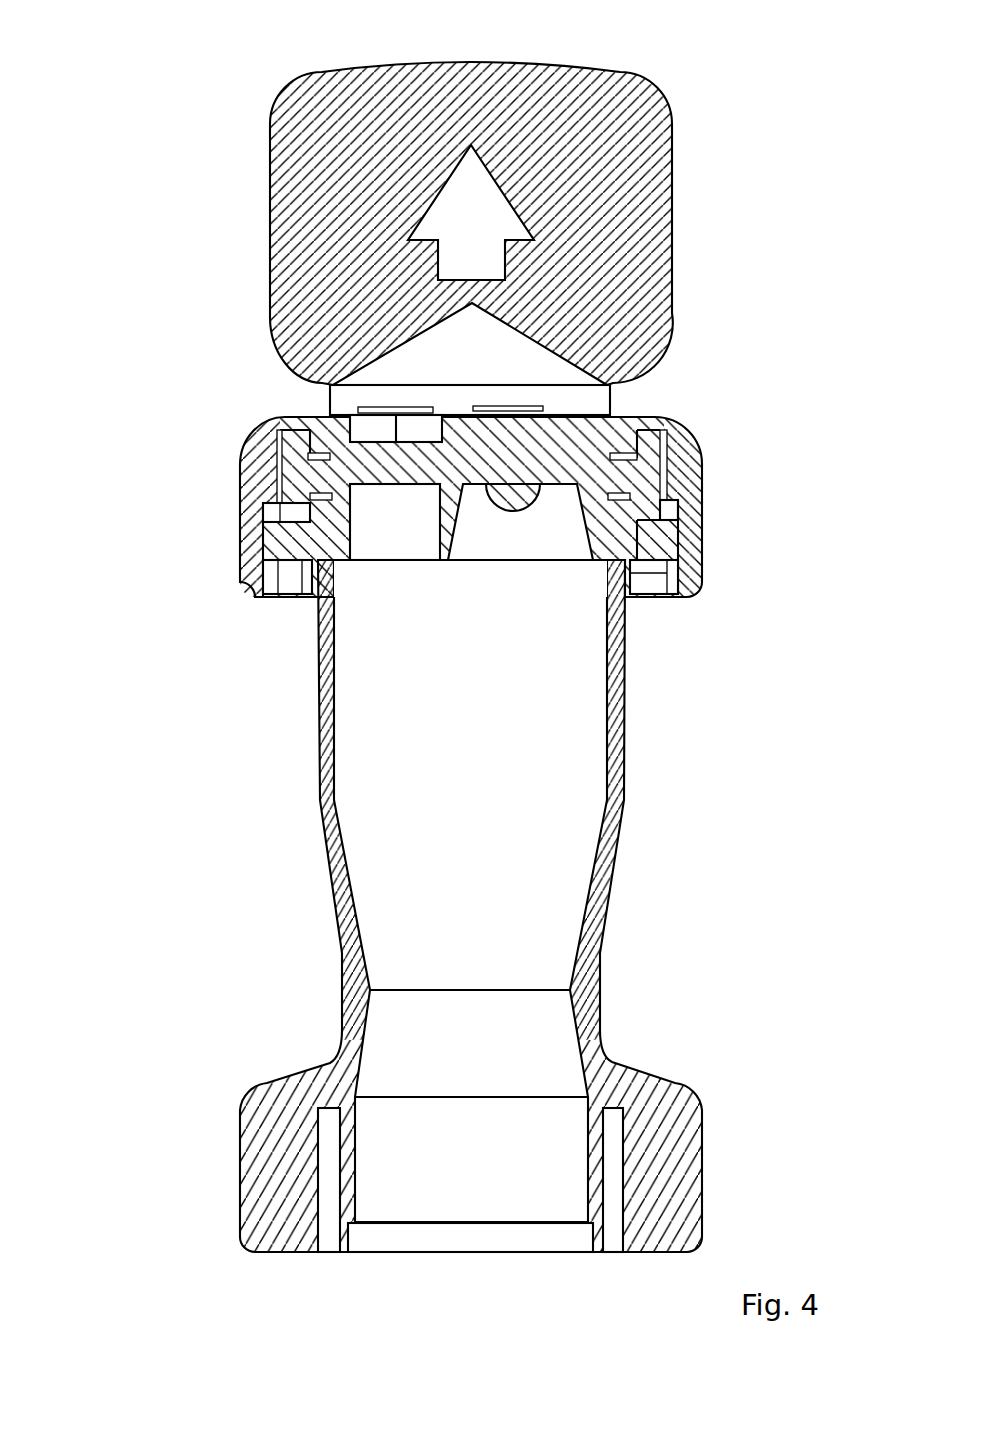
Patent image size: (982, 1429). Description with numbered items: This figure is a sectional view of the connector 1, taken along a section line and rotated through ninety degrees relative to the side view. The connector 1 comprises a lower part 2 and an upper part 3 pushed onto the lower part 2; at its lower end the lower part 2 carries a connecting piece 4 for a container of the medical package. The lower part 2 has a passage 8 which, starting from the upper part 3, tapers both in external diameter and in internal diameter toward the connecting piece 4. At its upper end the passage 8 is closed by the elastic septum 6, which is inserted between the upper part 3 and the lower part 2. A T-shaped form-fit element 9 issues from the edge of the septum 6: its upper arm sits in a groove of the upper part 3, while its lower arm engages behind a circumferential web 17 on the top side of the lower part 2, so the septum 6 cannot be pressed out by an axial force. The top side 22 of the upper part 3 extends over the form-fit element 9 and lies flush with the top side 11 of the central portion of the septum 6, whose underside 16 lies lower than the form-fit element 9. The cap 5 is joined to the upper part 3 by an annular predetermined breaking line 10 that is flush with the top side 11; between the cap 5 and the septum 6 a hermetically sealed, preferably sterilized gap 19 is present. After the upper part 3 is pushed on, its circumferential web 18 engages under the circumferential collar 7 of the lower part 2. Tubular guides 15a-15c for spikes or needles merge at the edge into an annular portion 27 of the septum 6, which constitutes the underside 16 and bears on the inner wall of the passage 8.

The connector 1 is at (211, 859).
The lower part 2 is at (623, 735).
The upper part 3 is at (700, 510).
The connecting piece 4 is at (665, 1135).
The cap 5 is at (613, 227).
The septum 6 is at (565, 453).
The circumferential collar 7 is at (660, 535).
The passage 8 is at (474, 912).
The T-shaped form-fit element 9 is at (290, 477).
The predetermined breaking line 10 is at (328, 415).
The top side of the central portion of the septum 11 is at (443, 393).
The tubular guides 15a-15c is at (443, 533).
The underside of the central portion of the septum 16 is at (347, 560).
The circumferential web 17 is at (267, 502).
The circumferential web of the upper part 18 is at (300, 582).
The gap 19 is at (348, 405).
The top side of the upper part 22 is at (288, 413).
The annular portion of the septum 27 is at (630, 563).